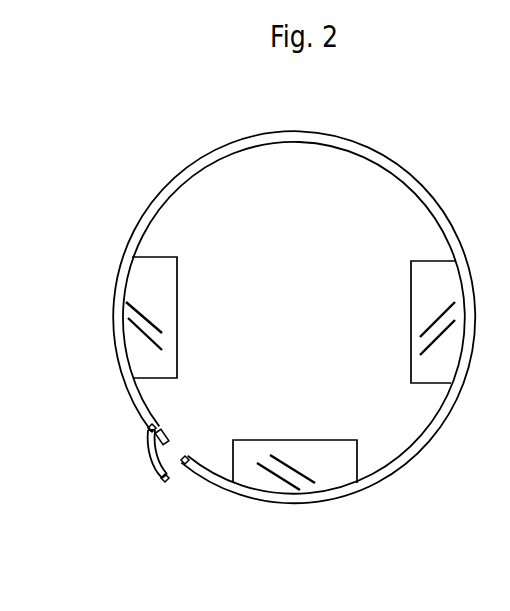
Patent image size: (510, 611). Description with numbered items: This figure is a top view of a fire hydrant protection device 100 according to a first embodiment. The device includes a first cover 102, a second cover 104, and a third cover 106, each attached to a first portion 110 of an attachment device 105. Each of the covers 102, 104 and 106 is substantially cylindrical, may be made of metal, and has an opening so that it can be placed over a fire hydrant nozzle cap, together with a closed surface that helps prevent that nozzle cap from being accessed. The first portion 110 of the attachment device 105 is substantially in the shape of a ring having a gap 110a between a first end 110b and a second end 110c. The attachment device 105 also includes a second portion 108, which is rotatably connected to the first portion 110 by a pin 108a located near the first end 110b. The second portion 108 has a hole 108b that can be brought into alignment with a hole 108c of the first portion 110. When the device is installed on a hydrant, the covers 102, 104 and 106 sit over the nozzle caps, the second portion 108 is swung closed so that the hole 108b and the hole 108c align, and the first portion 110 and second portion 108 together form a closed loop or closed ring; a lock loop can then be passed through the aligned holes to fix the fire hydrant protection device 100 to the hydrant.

The fire hydrant protection device 100 is at (416, 156).
The first cover 102 is at (145, 283).
The second cover 104 is at (438, 302).
The attachment device 105 is at (160, 198).
The third cover 106 is at (300, 455).
The second portion 108 is at (150, 451).
The pin 108a is at (153, 426).
The hole 108b is at (163, 483).
The hole 108c is at (188, 466).
The first portion 110 is at (228, 145).
The gap 110a is at (161, 431).
The first end 110b is at (168, 443).
The second end 110c is at (188, 457).